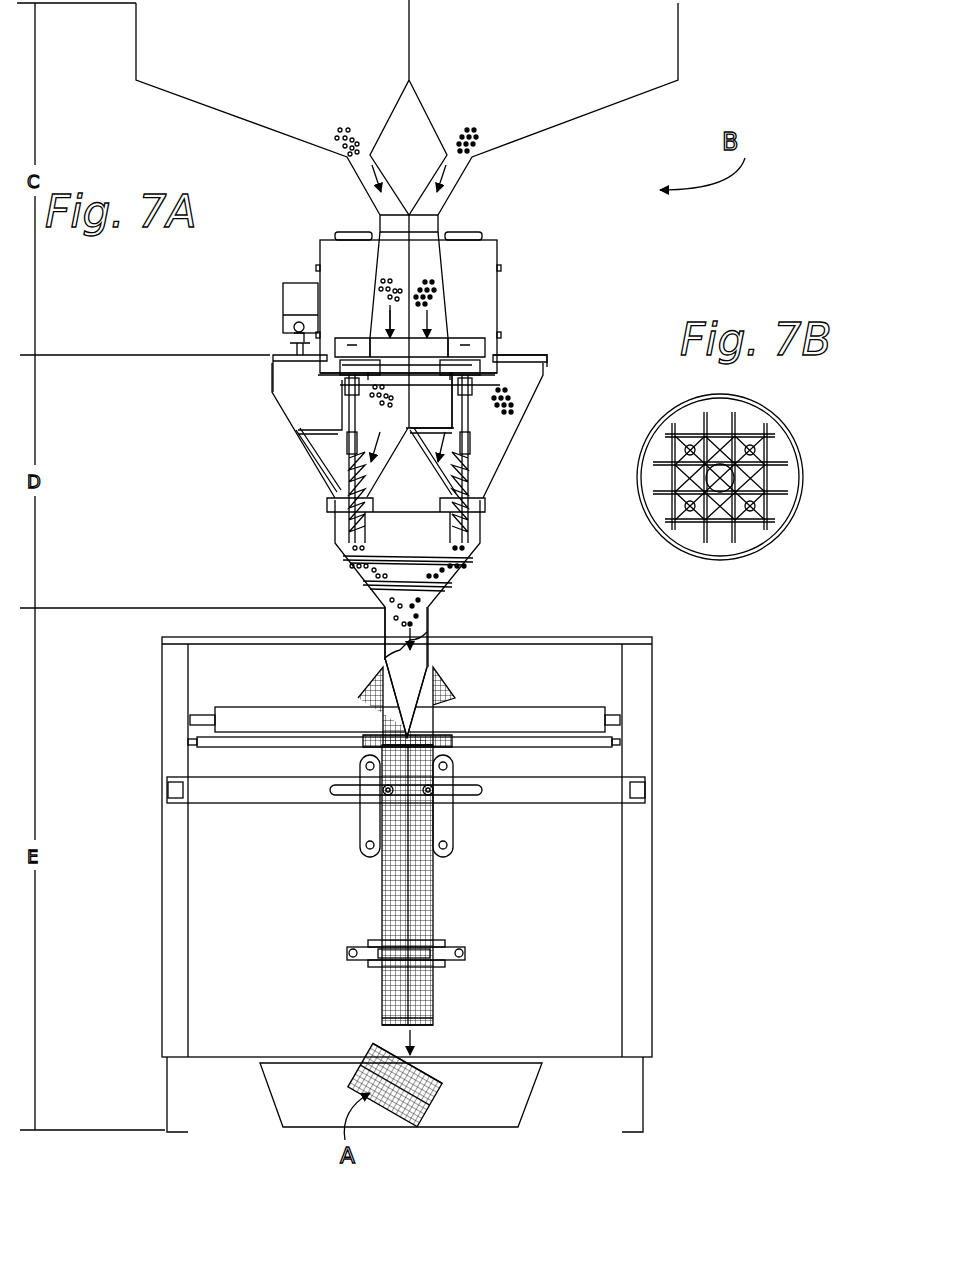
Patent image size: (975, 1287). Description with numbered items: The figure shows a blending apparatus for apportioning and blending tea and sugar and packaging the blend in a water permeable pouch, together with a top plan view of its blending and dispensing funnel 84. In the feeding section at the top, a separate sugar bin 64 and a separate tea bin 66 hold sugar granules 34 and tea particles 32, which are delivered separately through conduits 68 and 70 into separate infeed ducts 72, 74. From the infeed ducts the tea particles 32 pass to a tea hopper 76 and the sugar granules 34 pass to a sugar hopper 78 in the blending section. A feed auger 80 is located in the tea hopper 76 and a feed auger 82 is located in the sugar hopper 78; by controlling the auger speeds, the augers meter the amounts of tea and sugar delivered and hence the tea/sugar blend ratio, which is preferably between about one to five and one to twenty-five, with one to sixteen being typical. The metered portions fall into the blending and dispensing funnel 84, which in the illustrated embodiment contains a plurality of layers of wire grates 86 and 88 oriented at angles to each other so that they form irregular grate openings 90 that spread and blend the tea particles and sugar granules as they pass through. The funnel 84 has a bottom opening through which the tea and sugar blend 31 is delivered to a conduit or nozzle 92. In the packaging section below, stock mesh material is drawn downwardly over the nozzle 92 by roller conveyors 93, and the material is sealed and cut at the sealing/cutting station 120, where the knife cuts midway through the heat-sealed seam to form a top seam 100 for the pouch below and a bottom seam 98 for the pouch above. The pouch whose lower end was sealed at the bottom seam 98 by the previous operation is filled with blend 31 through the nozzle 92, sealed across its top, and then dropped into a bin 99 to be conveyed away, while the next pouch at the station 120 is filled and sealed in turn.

In FIG. 7A, the sugar bin 64 is at (258, 109).
In FIG. 7A, the tea bin 66 is at (558, 109).
In FIG. 7A, the conduit 68 is at (360, 182).
In FIG. 7A, the conduit 70 is at (455, 182).
In FIG. 7A, the sugar granules 34 is at (385, 278).
In FIG. 7A, the tea particles 32 is at (432, 290).
In FIG. 7A, the infeed duct 72 is at (372, 322).
In FIG. 7A, the infeed duct 74 is at (445, 322).
In FIG. 7A, the tea hopper 76 is at (530, 395).
In FIG. 7A, the sugar hopper 78 is at (330, 458).
In FIG. 7A, the feed auger 80 is at (478, 490).
In FIG. 7A, the feed auger 82 is at (358, 465).
In FIG. 7A, the blending and dispensing funnel 84 is at (458, 572).
In FIG. 7B, the blending and dispensing funnel 84 is at (800, 452).
In FIG. 7A, the tea and sugar blend 31 is at (420, 640).
In FIG. 7A, the nozzle 92 is at (432, 655).
In FIG. 7A, the roller conveyors 93 is at (358, 818).
In FIG. 7A, the sealing/cutting station 120 is at (340, 953).
In FIG. 7A, the top seam 100 is at (372, 1050).
In FIG. 7A, the bottom seam 98 is at (425, 1090).
In FIG. 7A, the bin 99 is at (530, 1100).
In FIG. 7B, the wire grates 86 is at (770, 512).
In FIG. 7B, the wire grates 88 is at (727, 530).
In FIG. 7B, the irregular grate openings 90 is at (750, 445).